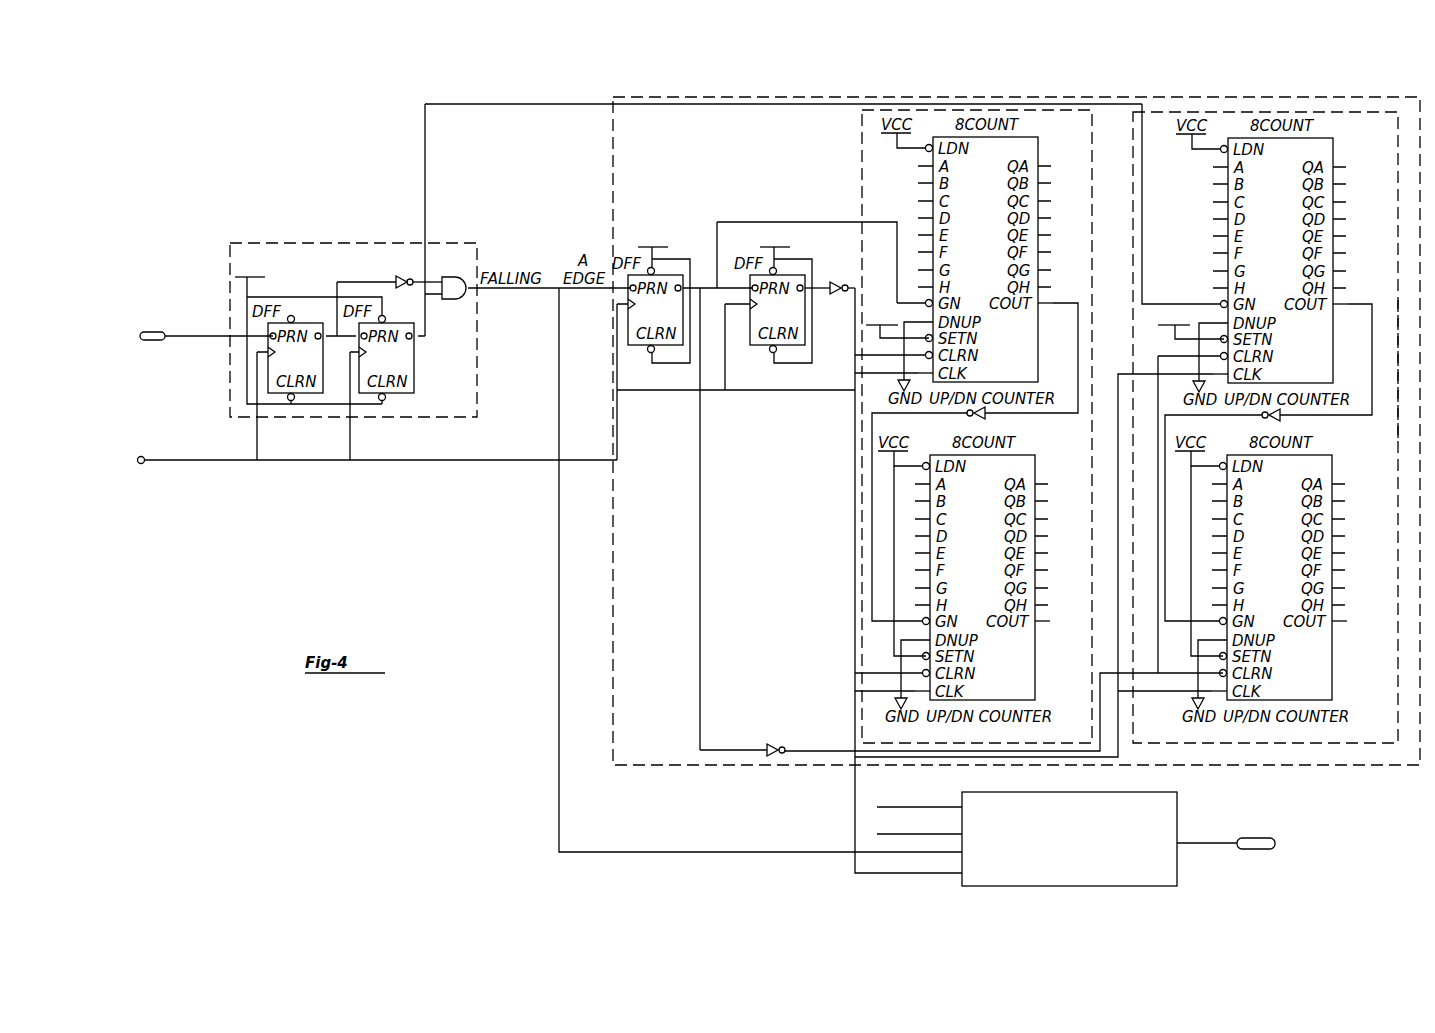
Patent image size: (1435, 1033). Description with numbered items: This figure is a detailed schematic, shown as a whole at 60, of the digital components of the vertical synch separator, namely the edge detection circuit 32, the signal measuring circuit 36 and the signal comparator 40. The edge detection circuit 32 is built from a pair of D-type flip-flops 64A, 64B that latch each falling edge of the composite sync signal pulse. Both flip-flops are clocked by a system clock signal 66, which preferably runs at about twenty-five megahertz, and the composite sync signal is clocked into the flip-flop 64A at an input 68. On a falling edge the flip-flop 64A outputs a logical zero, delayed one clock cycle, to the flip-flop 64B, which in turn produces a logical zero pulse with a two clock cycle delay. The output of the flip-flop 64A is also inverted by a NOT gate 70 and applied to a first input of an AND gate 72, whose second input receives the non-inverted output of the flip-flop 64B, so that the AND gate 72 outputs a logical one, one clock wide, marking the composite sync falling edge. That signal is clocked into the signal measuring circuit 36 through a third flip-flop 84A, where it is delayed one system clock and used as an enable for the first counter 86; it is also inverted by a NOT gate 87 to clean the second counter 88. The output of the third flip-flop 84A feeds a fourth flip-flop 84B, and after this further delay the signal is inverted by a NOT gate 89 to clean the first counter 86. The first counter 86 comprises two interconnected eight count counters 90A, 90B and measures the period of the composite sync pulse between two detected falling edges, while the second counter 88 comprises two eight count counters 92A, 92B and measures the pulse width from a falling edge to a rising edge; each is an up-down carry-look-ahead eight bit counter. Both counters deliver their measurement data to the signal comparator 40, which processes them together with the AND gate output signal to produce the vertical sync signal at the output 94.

The edge detection circuit 32 is at (374, 282).
The signal measuring circuit 36 is at (775, 97).
The signal comparator 40 is at (1177, 876).
The detailed schematic diagram 60 is at (1275, 93).
The D-type flip-flop 64A is at (315, 322).
The D-type flip-flop 64B is at (415, 380).
The system clock signal 66 is at (237, 462).
The input 68 is at (237, 332).
The NOT gate 70 is at (407, 279).
The AND gate 72 is at (455, 299).
The third flip-flop 84A is at (672, 272).
The fourth flip-flop 84B is at (795, 272).
The first counter 86 is at (855, 523).
The NOT gate 87 is at (780, 745).
The second counter 88 is at (1398, 380).
The NOT gate 89 is at (845, 296).
The 8 count counter 90A is at (1028, 137).
The 8 count counter 90B is at (1035, 677).
The 8 count counter 92A is at (1325, 138).
The 8 count counter 92B is at (1320, 455).
The vertical sync signal output 94 is at (1248, 851).